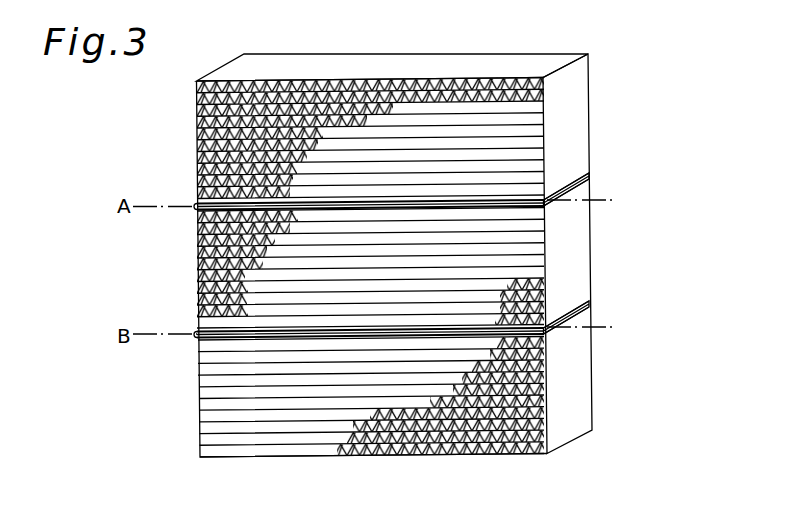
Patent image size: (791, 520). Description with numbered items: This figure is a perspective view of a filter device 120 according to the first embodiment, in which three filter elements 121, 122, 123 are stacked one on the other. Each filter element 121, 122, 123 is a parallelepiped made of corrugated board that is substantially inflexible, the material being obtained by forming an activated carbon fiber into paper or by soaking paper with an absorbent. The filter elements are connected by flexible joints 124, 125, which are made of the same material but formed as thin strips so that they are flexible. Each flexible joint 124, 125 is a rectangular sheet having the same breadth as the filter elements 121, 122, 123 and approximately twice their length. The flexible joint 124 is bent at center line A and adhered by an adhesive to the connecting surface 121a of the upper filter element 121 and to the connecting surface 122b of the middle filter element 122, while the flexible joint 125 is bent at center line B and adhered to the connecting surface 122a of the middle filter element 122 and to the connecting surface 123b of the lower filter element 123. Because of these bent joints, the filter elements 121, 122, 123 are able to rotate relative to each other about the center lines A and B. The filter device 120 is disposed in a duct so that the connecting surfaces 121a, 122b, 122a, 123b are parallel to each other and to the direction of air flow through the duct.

The filter device 120 is at (230, 464).
The filter element 121 is at (573, 121).
The connecting surface 121a is at (575, 173).
The flexible joint 124 is at (589, 173).
The connecting surface 122b is at (586, 190).
The filter element 122 is at (578, 246).
The connecting surface 122a is at (580, 305).
The flexible joint 125 is at (590, 305).
The connecting surface 123b is at (585, 321).
The filter element 123 is at (582, 409).